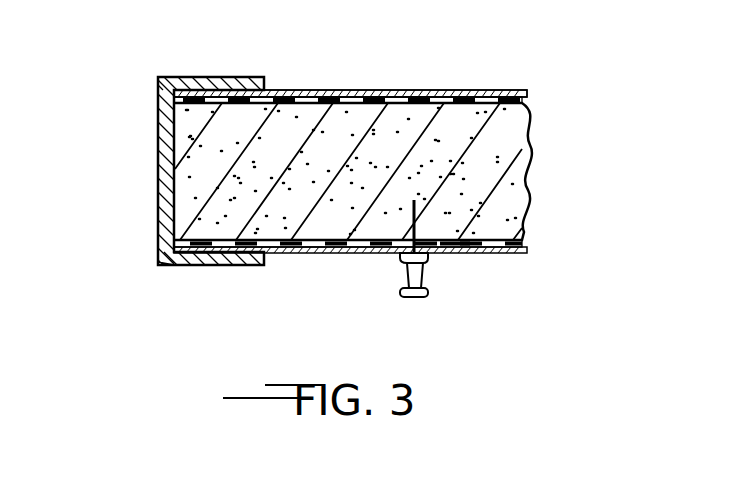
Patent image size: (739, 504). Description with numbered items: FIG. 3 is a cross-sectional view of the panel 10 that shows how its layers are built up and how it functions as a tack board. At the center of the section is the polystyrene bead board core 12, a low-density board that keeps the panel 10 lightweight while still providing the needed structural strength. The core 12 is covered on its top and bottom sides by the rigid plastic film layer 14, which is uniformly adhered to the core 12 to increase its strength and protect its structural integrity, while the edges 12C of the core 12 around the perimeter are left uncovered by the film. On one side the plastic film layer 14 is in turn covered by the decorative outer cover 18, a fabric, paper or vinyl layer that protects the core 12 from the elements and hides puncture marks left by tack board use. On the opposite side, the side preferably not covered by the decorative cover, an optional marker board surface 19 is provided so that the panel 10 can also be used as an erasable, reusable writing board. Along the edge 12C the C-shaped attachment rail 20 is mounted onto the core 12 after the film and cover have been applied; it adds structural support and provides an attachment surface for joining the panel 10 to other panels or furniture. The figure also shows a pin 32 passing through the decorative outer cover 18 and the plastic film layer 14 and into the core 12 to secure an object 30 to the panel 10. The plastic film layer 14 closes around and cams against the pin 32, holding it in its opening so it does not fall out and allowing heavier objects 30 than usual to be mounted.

The panel 10 is at (368, 92).
The core 12 is at (508, 224).
The edges 12C is at (163, 185).
The plastic film layer 14 is at (294, 99).
The decorative outer cover 18 is at (313, 253).
The marker board surface 19 is at (461, 92).
The C-shaped attachment rail 20 is at (180, 258).
The object 30 is at (453, 253).
The pin 32 is at (415, 297).